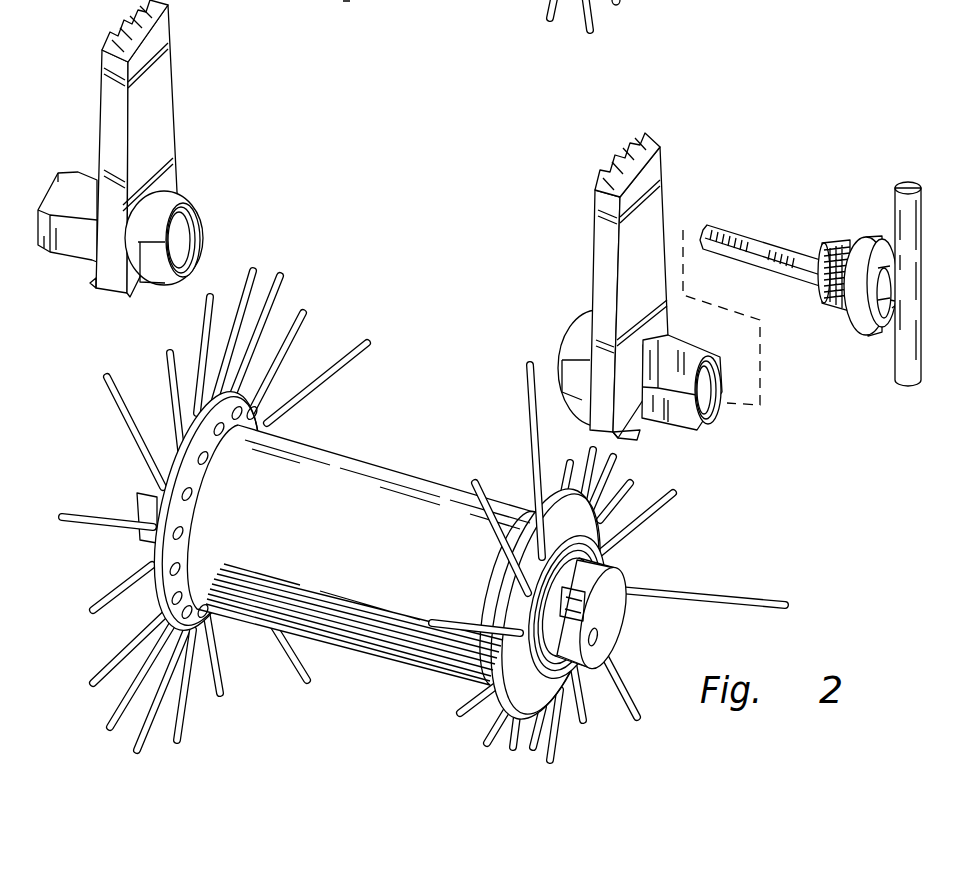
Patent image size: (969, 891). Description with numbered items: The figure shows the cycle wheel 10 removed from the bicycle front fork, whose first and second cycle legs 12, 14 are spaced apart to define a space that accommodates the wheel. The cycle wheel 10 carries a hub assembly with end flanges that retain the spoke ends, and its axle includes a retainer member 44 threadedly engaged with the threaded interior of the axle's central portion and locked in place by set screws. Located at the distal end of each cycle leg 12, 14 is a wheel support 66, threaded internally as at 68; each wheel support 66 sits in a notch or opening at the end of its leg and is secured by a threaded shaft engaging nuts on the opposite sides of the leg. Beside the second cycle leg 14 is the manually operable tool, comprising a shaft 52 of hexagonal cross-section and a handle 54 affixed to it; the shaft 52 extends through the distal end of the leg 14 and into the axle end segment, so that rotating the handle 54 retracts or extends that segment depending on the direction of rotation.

The cycle wheel 10 is at (423, 515).
The first cycle leg 12 is at (160, 80).
The second cycle leg 14 is at (607, 237).
The retainer member 44 is at (580, 578).
The shaft 52 is at (730, 247).
The handle 54 is at (895, 355).
The wheel support 66 is at (381, 282).
The threaded interior 68 is at (185, 230).